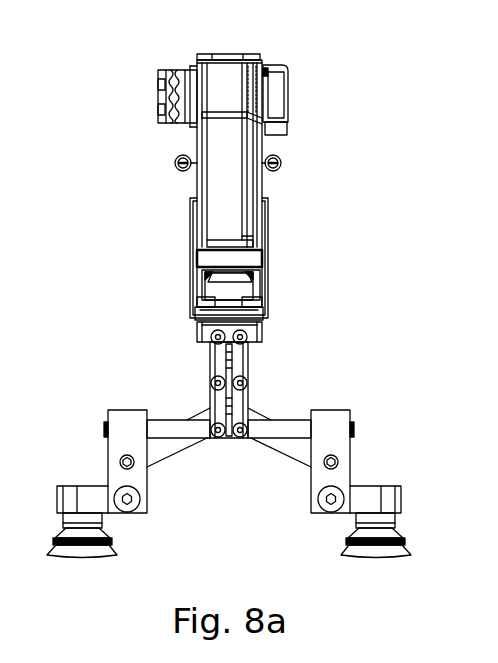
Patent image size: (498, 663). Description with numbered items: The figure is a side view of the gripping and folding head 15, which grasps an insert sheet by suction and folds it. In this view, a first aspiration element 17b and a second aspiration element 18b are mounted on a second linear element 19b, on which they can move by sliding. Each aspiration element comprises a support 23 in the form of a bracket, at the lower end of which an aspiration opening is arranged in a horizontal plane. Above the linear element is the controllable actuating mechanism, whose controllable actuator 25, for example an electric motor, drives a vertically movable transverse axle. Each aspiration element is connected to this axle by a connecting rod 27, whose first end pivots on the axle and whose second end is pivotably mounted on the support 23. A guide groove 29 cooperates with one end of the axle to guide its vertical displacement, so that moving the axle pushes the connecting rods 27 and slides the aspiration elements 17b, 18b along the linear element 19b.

The gripping and folding head 15 is at (106, 167).
The first aspiration element 17b is at (407, 547).
The second aspiration element 18b is at (55, 540).
The second linear element 19b is at (283, 420).
The support 23 is at (128, 410).
The controllable actuator 25 is at (253, 287).
The connecting rod 27 is at (167, 457).
The guide groove 29 is at (228, 372).